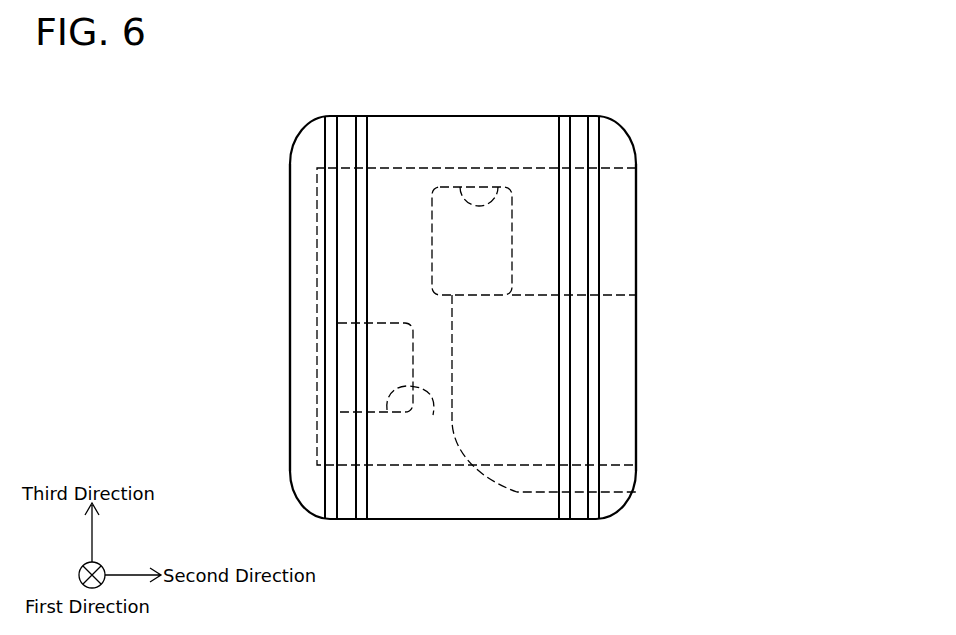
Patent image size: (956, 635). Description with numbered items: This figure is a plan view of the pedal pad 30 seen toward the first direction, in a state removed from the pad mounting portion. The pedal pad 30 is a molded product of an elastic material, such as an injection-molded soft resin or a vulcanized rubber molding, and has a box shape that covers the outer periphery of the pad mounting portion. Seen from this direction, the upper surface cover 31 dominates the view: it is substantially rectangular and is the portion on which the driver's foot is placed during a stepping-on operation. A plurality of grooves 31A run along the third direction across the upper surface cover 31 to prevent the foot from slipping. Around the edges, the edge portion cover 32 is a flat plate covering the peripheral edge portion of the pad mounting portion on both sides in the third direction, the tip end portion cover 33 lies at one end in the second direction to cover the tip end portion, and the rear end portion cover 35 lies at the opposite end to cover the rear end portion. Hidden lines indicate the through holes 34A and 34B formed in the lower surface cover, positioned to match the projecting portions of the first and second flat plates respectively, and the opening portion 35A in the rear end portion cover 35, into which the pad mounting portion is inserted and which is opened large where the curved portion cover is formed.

The pedal pad 30 is at (640, 95).
The upper surface cover 31 is at (306, 150).
The grooves 31A is at (365, 125).
The edge portion cover 32 is at (422, 127).
The tip end portion cover 33 is at (290, 433).
The through hole 34A is at (498, 185).
The through hole 34B is at (433, 415).
The rear end portion cover 35 is at (638, 433).
The opening portion 35A is at (617, 168).